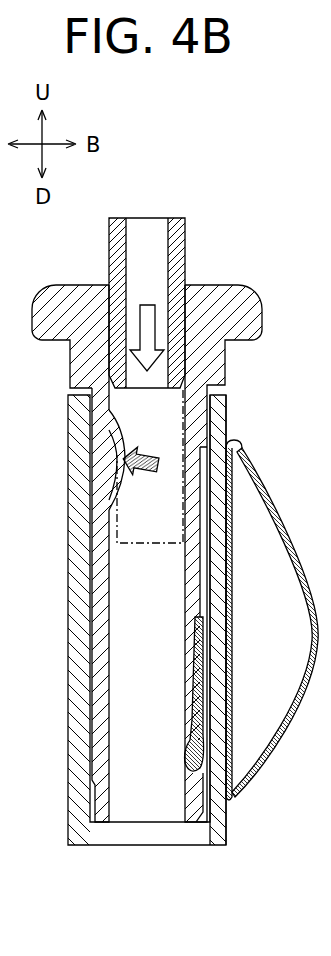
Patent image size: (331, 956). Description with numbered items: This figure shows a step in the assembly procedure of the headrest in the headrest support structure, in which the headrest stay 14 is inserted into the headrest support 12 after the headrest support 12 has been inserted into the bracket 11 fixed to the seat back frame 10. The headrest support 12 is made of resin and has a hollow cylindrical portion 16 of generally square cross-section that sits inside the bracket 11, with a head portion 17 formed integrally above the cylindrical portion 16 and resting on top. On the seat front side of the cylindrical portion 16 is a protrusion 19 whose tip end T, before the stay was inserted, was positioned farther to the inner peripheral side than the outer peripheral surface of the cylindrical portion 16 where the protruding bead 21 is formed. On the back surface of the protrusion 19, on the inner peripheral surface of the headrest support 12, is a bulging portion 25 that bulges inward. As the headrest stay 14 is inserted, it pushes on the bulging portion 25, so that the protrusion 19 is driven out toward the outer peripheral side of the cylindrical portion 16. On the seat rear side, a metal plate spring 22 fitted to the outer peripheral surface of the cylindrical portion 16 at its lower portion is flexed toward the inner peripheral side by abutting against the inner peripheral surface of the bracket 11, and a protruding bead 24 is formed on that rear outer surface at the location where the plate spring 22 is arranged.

The seat back frame 10 is at (292, 527).
The bracket 11 is at (68, 556).
The headrest support 12 is at (95, 284).
The headrest stay 14 is at (187, 255).
The cylindrical portion 16 is at (199, 566).
The head portion 17 is at (256, 312).
The protrusion 19 is at (103, 449).
The protruding bead 21 is at (81, 724).
The plate spring 22 is at (191, 755).
The protruding bead 24 is at (201, 415).
The bulging portion 25 is at (126, 452).
The tip end T is at (93, 452).